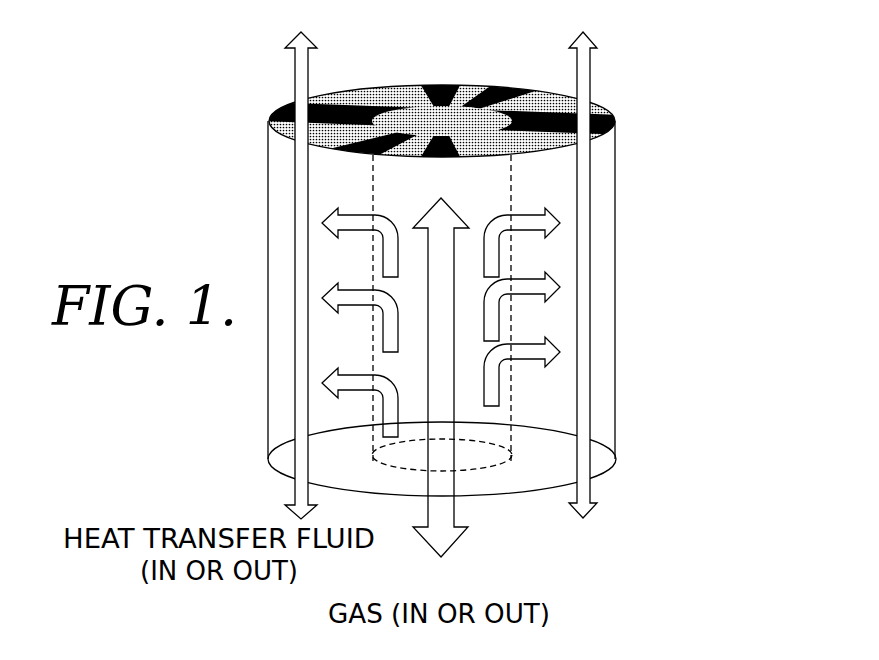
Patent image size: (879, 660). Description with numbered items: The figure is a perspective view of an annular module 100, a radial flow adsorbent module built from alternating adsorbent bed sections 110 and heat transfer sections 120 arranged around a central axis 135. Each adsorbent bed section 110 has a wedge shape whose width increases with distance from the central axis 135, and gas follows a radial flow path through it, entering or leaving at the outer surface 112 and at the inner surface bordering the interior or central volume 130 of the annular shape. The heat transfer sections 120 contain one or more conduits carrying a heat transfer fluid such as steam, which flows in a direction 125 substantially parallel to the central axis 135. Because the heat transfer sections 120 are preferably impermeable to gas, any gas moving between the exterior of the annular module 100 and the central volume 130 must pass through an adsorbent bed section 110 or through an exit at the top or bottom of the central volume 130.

The annular module 100 is at (713, 247).
The adsorbent bed sections 110 is at (347, 88).
The outer surface 112 is at (615, 378).
The heat transfer sections 120 is at (268, 110).
The direction 125 is at (589, 298).
The central volume 130 is at (418, 108).
The central axis 135 is at (463, 117).